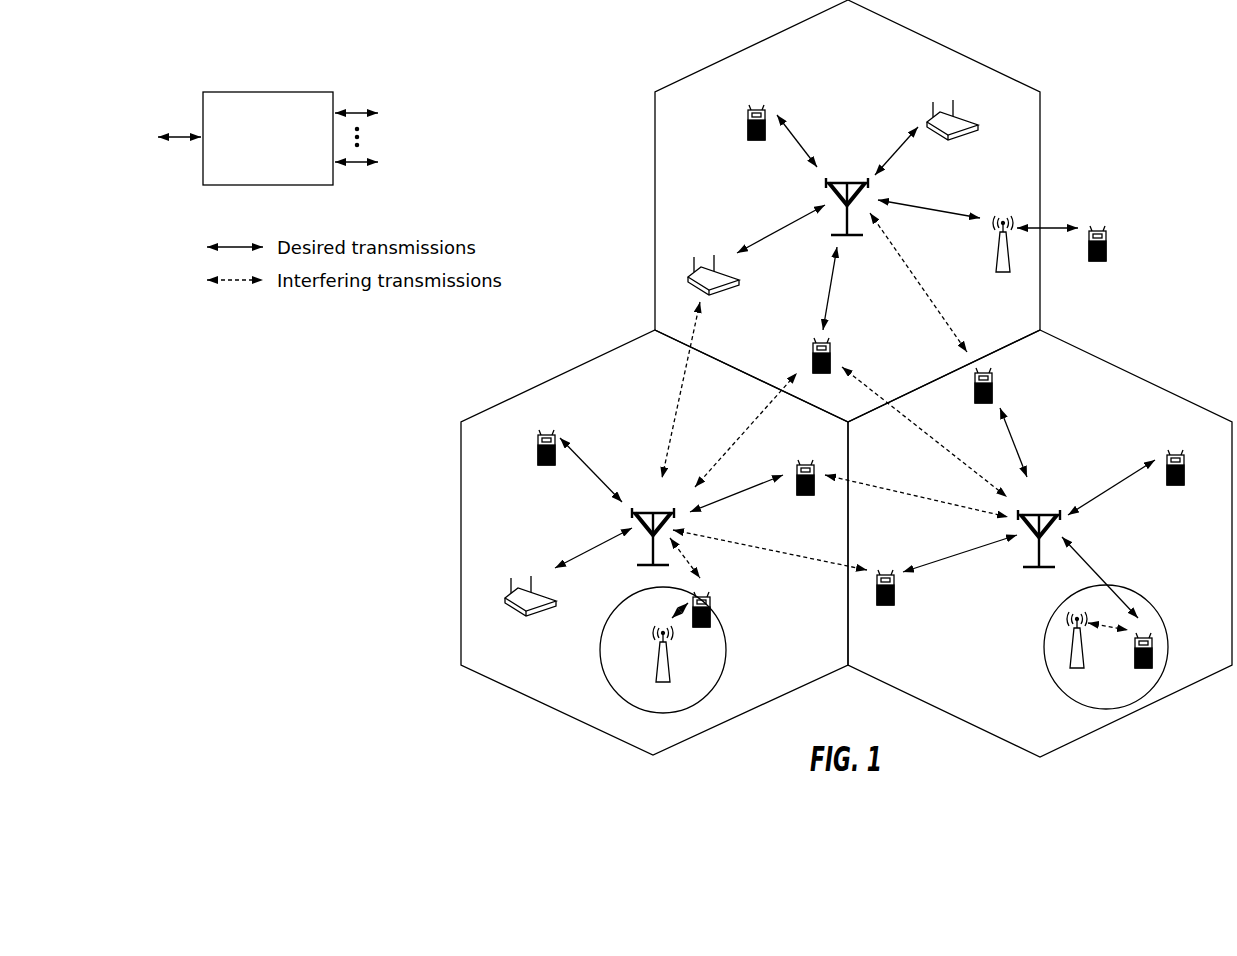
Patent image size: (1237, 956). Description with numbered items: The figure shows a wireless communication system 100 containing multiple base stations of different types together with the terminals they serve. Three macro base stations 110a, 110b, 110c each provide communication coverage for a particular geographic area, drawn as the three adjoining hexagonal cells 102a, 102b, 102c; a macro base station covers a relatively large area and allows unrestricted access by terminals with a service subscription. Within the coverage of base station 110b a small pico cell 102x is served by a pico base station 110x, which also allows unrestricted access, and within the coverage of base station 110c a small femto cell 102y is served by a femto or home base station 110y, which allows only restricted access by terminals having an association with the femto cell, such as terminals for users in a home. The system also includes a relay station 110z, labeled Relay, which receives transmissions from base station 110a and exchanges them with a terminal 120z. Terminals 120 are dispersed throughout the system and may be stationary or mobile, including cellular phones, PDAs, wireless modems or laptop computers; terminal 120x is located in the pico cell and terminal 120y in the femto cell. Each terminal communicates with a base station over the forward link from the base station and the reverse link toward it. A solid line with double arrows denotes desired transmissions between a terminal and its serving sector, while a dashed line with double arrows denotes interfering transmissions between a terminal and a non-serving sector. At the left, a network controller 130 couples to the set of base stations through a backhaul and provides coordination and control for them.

The wireless communication system 100 is at (1172, 60).
The macro cell 102a is at (942, 45).
The macro cell 102b is at (558, 375).
The macro cell 102c is at (1141, 377).
The pico cell 102x is at (620, 605).
The femto cell 102y is at (1140, 594).
The base station 110a is at (833, 183).
The base station 110b is at (643, 513).
The base station 110c is at (1033, 515).
The base station 110x is at (671, 672).
The base station 110y is at (1083, 660).
The relay station 110z is at (996, 258).
The terminal 120 is at (750, 105).
The terminal 120x is at (709, 610).
The terminal 120y is at (1135, 665).
The terminal 120z is at (1105, 258).
The network controller 130 is at (262, 91).